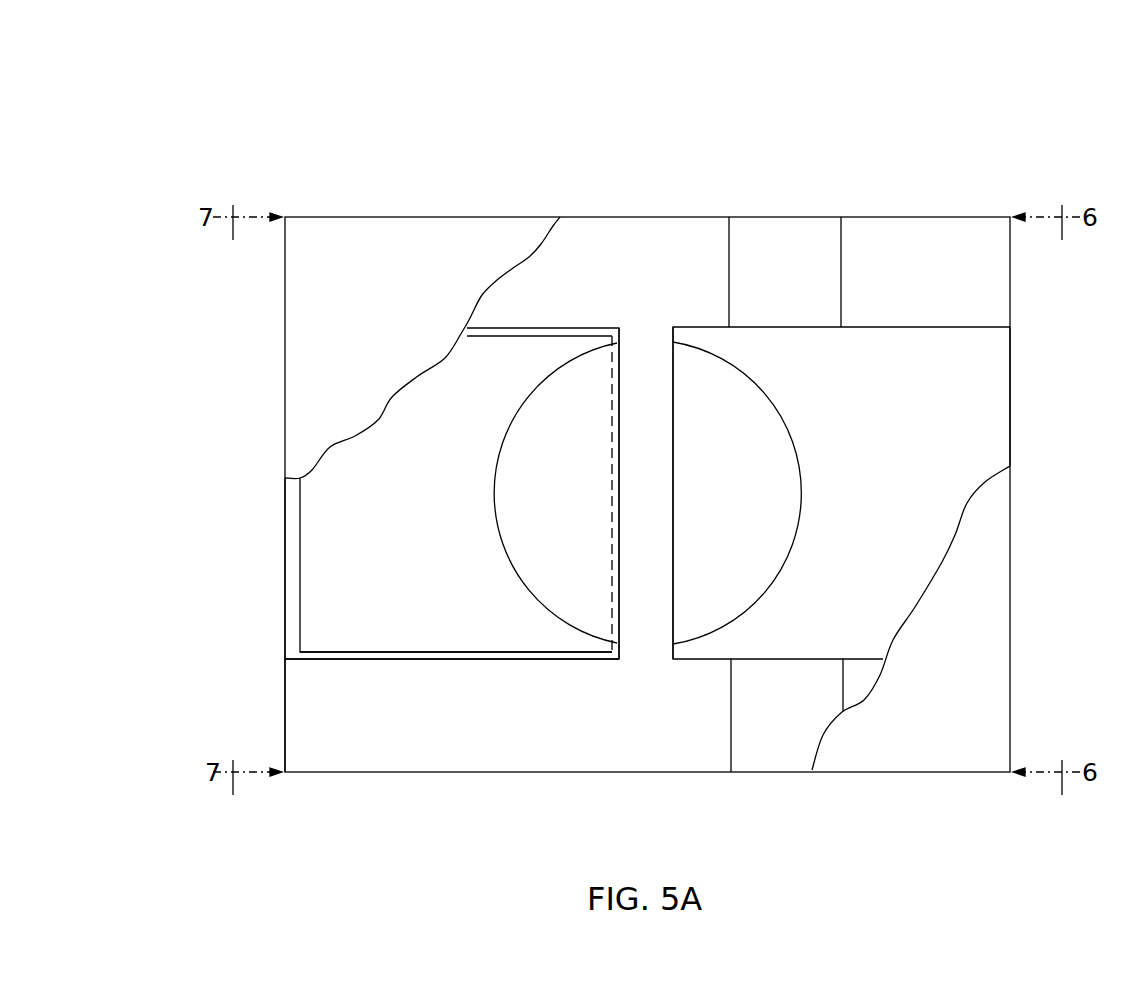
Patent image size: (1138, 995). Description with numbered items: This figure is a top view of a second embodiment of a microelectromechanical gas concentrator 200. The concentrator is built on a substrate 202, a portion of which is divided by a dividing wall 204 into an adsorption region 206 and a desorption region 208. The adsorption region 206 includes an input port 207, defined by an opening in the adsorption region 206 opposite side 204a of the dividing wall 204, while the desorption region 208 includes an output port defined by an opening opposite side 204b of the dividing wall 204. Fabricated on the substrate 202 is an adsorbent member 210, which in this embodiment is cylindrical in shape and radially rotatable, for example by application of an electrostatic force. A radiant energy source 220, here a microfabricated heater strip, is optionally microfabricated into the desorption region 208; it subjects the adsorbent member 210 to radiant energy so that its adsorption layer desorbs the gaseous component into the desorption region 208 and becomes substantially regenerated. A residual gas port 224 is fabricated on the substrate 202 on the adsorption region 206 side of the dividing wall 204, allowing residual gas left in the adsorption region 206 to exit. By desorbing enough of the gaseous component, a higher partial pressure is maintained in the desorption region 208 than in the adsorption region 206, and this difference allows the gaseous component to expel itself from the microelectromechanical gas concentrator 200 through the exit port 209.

The microelectromechanical gas concentrator 200 is at (330, 142).
The substrate 202 is at (542, 268).
The dividing wall 204 is at (645, 347).
The side of the dividing wall 204a is at (683, 358).
The side of the dividing wall 204b is at (600, 357).
The adsorption region 206 is at (964, 384).
The input port 207 is at (1010, 440).
The desorption region 208 is at (325, 497).
The exit port 209 is at (285, 595).
The adsorbent member 210 is at (748, 557).
The radiant energy source 220 is at (515, 633).
The residual gas port 224 is at (812, 250).